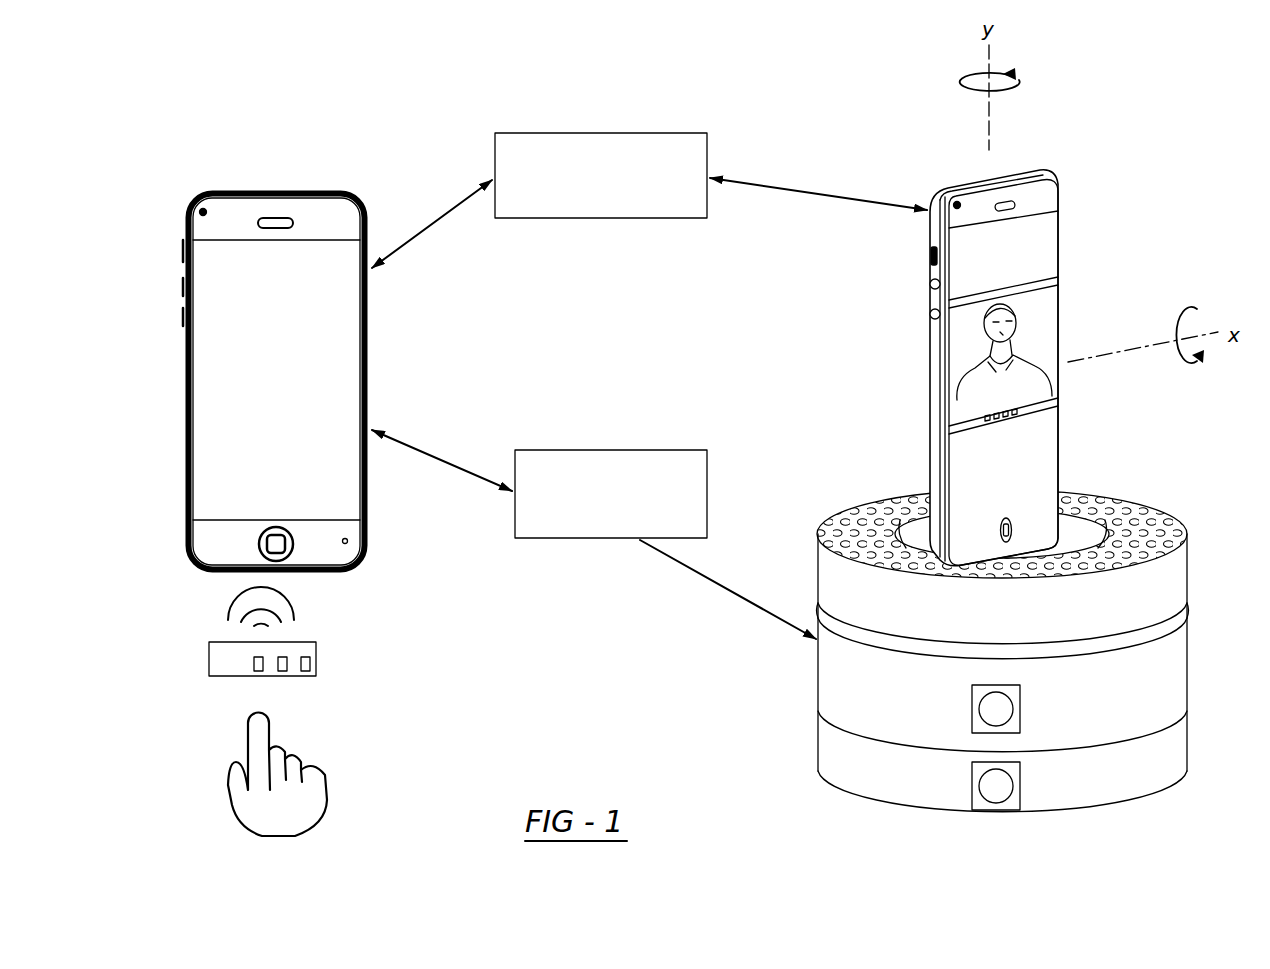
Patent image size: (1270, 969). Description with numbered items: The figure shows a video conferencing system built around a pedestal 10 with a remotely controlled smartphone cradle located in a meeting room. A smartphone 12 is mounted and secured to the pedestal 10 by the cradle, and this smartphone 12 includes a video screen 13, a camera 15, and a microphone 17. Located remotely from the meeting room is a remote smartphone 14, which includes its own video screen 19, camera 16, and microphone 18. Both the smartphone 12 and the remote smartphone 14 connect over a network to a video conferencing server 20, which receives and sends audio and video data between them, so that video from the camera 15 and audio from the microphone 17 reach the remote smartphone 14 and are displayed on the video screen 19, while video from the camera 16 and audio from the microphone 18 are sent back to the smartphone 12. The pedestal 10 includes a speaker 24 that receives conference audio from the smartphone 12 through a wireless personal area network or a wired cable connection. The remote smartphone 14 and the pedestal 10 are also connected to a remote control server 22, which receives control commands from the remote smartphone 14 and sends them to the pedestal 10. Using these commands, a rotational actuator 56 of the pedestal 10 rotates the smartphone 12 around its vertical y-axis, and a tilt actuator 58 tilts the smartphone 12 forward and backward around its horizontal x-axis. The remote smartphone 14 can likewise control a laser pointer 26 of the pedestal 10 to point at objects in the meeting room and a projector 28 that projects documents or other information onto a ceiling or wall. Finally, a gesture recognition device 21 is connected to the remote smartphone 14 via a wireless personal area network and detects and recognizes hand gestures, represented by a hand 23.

The pedestal 10 is at (817, 672).
The smartphone 12 is at (1060, 200).
The video screen 13 is at (1015, 247).
The remote smartphone 14 is at (366, 520).
The camera 15 is at (955, 204).
The camera 16 is at (198, 212).
The microphone 17 is at (1041, 522).
The microphone 18 is at (346, 546).
The video screen 19 is at (240, 386).
The video conferencing server 20 is at (617, 133).
The gesture recognition device 21 is at (209, 660).
The remote control server 22 is at (592, 450).
The hand 23 is at (228, 772).
The speaker 24 is at (852, 538).
The laser pointer 26 is at (1003, 703).
The projector 28 is at (1003, 783).
The rotational actuator 56 is at (907, 527).
The tilt actuator 58 is at (1097, 529).